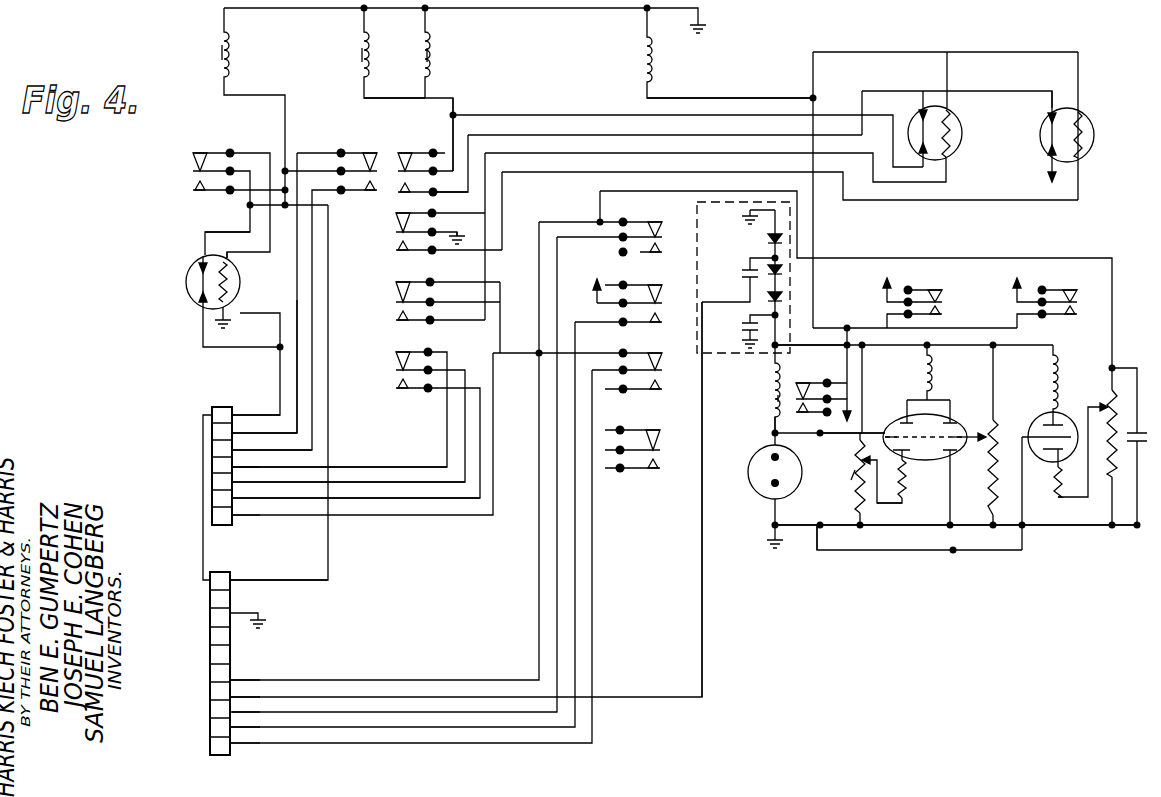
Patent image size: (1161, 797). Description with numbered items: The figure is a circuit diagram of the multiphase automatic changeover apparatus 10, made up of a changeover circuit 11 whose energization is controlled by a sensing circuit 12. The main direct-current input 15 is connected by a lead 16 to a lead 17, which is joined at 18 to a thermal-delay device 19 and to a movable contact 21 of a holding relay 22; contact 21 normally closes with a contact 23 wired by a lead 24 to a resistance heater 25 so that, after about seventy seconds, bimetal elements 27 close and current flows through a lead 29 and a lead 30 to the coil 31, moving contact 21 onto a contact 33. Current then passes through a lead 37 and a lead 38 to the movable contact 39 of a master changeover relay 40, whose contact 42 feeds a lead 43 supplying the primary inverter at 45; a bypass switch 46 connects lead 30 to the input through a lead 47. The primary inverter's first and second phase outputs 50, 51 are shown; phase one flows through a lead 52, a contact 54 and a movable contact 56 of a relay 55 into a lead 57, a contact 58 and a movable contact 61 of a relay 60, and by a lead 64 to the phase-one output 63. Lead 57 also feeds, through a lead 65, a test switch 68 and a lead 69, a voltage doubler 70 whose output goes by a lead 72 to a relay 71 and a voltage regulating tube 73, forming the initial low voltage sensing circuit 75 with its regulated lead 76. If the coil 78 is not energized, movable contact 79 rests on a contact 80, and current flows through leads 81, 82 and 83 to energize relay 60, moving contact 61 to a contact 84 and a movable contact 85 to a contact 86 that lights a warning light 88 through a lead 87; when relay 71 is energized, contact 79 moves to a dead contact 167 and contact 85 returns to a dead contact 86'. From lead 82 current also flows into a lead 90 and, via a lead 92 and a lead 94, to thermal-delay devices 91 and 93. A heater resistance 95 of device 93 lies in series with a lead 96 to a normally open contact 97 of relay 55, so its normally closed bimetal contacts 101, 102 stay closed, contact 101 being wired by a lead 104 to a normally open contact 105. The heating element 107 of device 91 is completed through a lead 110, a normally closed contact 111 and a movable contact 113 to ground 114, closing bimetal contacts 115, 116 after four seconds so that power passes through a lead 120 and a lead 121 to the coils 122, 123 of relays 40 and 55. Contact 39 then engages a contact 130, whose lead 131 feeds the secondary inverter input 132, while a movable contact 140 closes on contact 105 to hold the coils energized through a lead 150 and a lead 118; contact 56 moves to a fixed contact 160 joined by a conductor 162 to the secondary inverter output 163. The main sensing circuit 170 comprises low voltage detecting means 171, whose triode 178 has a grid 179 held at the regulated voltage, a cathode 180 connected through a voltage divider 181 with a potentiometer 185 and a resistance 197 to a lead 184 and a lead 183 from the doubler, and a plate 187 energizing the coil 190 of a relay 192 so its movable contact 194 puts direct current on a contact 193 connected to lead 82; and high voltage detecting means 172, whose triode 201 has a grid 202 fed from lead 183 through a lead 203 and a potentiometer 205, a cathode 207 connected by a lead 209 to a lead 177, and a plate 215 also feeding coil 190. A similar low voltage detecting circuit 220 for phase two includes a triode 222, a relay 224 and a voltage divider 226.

The multiphase automatic changeover apparatus 10 is at (767, 654).
The changeover circuit 11 is at (512, 548).
The sensing circuit 12 is at (924, 586).
The main D.-C. input 15 is at (210, 582).
The lead 16 is at (298, 582).
The lead 17 is at (205, 232).
The connection point 18 is at (200, 262).
The thermal-delay device 19 is at (178, 273).
The movable contact 21 is at (192, 174).
The holding relay 22 is at (216, 38).
The contact 23 is at (192, 156).
The lead 24 is at (240, 252).
The resistance heater 25 is at (232, 285).
The bimetal elements 27 is at (196, 294).
The lead 29 is at (244, 350).
The lead 30 is at (276, 314).
The coil 31 is at (218, 66).
The contact 33 is at (192, 186).
The lead 37 is at (248, 206).
The lead 38 is at (298, 156).
The movable contact 39 is at (376, 160).
The master changeover relay 40 is at (356, 44).
The contact 42 is at (366, 150).
The lead 43 is at (296, 386).
The primary inverter D.-C. supply point 45 is at (212, 432).
The bypass switch 46 is at (212, 412).
The lead 47 is at (202, 545).
The first phase output of primary inverter 50 is at (212, 466).
The second phase output of primary inverter 51 is at (212, 515).
The lead 52 is at (358, 466).
The contact 54 is at (394, 355).
The relay 55 is at (420, 42).
The movable contact 56 is at (394, 371).
The lead 57 is at (528, 353).
The contact 58 is at (660, 362).
The relay 60 is at (638, 50).
The movable contact 61 is at (660, 382).
The A.-C. output of phase one 63 is at (208, 746).
The lead 64 is at (406, 750).
The lead 65 is at (280, 678).
The test switch 68 is at (208, 700).
The lead 69 is at (392, 692).
The D.-C. voltage doubler 70 is at (697, 224).
The relay 71 is at (756, 393).
The lead 72 is at (770, 366).
The voltage regulating tube 73 is at (764, 462).
The initial low voltage sensing circuit 75 is at (766, 512).
The lead 76 is at (850, 438).
The coil 78 is at (770, 414).
The movable contact 79 is at (772, 402).
The contact 80 is at (810, 390).
The lead 81 is at (846, 373).
The lead 82 is at (822, 310).
The lead 83 is at (745, 92).
The contact 84 is at (658, 392).
The movable contact 85 is at (664, 310).
The contact 86 is at (628, 324).
The dead contact 86' is at (635, 281).
The lead 87 is at (342, 730).
The warning light 88 is at (208, 726).
The lead 90 is at (862, 50).
The thermal-delay device 91 is at (968, 118).
The lead 92 is at (946, 70).
The thermal-delay device 93 is at (1095, 114).
The lead 94 is at (1042, 50).
The heater resistance 95 is at (1086, 150).
The lead 96 is at (538, 178).
The normally open contact 97 is at (396, 252).
The bimetal contact 101 is at (1046, 126).
The bimetal contact 102 is at (1046, 147).
The lead 104 is at (524, 134).
The normally open contact 105 is at (404, 192).
The resistance heating element 107 is at (952, 152).
The lead 110 is at (579, 156).
The normally closed contact 111 is at (396, 216).
The movable contact 113 is at (394, 236).
The ground 114 is at (460, 246).
The bimetal contact 115 is at (916, 114).
The bimetal contact 116 is at (918, 149).
The lead 118 is at (1018, 80).
The lead 120 is at (486, 114).
The lead 121 is at (404, 96).
The coil 122 is at (360, 64).
The coil 123 is at (431, 62).
The contact 130 is at (358, 192).
The lead 131 is at (329, 282).
The secondary inverter D.-C. input 132 is at (212, 448).
The movable contact 140 is at (428, 146).
The lead 150 is at (450, 114).
The fixed contact 160 is at (394, 390).
The conductor 162 is at (406, 484).
The secondary inverter output 163 is at (212, 483).
The dead contact 167 is at (811, 425).
The main sensing circuit 170 is at (896, 552).
The low voltage detecting circuit means 171 is at (900, 418).
The high voltage detecting circuit means 172 is at (965, 418).
The lead 177 is at (844, 560).
The triode 178 is at (878, 426).
The grid 179 is at (925, 436).
The cathode 180 is at (904, 496).
The voltage divider 181 is at (854, 492).
The lead 183 is at (840, 344).
The lead 184 is at (864, 354).
The potentiometer 185 is at (858, 466).
The plate 187 is at (907, 402).
The coil 190 is at (934, 366).
The relay 192 is at (950, 284).
The contact 193 is at (948, 314).
The movable contact 194 is at (948, 302).
The resistance 197 is at (884, 502).
The triode 201 is at (972, 466).
The grid 202 is at (935, 441).
The lead 203 is at (992, 392).
The potentiometer 205 is at (998, 426).
The cathode 207 is at (908, 500).
The lead 209 is at (954, 500).
The plate 215 is at (948, 404).
The low voltage detecting circuit 220 is at (1070, 404).
The triode 222 is at (1048, 476).
The relay 224 is at (1068, 346).
The voltage divider 226 is at (1098, 502).